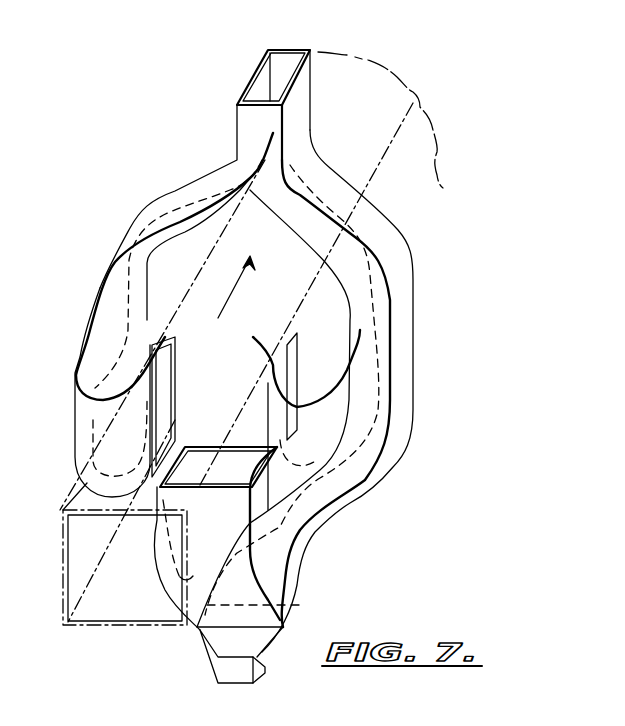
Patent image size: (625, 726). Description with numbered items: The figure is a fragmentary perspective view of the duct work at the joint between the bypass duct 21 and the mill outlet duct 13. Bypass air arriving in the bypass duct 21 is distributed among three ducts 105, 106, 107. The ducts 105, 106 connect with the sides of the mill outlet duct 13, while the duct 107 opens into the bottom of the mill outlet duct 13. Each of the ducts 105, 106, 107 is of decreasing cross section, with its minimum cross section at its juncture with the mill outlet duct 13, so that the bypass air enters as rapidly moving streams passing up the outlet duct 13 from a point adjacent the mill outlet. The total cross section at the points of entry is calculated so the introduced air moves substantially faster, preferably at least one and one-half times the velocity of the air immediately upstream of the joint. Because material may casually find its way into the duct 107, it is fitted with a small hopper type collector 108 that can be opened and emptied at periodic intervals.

The bypass duct 21 is at (296, 50).
The mill outlet duct 13 is at (412, 195).
The duct 106 is at (107, 285).
The duct 105 is at (247, 295).
The duct 107 is at (347, 497).
The hopper type collector 108 is at (263, 653).